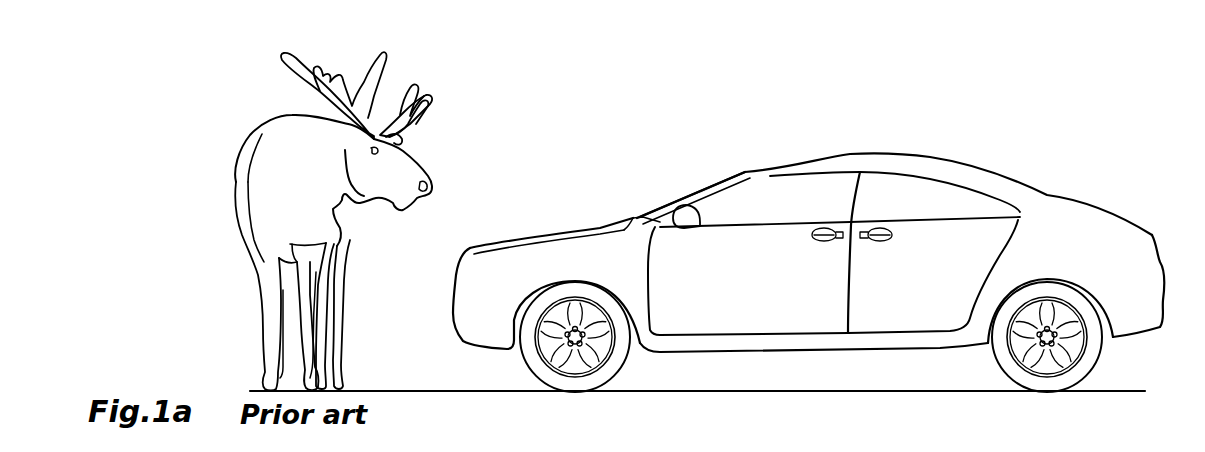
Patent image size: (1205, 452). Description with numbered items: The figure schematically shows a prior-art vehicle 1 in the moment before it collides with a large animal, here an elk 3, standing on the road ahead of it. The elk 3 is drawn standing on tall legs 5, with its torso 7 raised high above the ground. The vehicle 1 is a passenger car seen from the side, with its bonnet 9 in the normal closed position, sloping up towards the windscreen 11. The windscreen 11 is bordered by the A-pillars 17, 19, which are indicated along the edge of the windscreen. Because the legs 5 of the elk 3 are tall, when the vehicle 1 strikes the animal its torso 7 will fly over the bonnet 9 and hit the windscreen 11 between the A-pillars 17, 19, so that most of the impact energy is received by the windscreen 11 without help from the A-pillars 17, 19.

The vehicle 1 is at (553, 152).
The large animal (elk) 3 is at (234, 120).
The legs 5 is at (254, 331).
The torso 7 is at (260, 203).
The bonnet 9 is at (556, 236).
The windscreen 11 is at (708, 180).
The A-pillar 17 is at (727, 192).
The A-pillar 19 is at (738, 176).